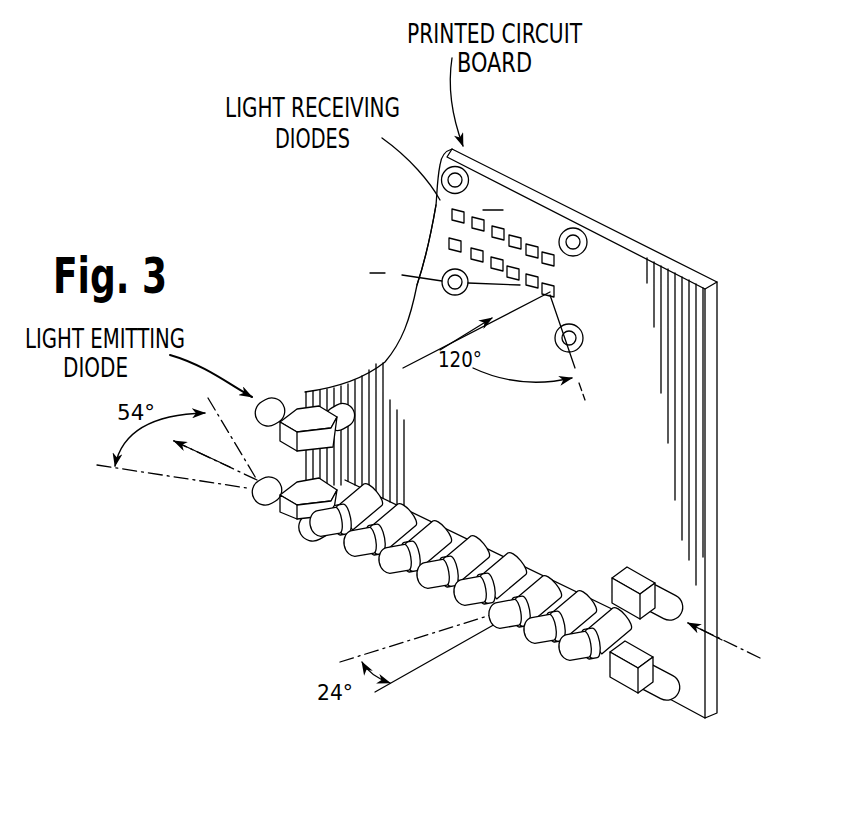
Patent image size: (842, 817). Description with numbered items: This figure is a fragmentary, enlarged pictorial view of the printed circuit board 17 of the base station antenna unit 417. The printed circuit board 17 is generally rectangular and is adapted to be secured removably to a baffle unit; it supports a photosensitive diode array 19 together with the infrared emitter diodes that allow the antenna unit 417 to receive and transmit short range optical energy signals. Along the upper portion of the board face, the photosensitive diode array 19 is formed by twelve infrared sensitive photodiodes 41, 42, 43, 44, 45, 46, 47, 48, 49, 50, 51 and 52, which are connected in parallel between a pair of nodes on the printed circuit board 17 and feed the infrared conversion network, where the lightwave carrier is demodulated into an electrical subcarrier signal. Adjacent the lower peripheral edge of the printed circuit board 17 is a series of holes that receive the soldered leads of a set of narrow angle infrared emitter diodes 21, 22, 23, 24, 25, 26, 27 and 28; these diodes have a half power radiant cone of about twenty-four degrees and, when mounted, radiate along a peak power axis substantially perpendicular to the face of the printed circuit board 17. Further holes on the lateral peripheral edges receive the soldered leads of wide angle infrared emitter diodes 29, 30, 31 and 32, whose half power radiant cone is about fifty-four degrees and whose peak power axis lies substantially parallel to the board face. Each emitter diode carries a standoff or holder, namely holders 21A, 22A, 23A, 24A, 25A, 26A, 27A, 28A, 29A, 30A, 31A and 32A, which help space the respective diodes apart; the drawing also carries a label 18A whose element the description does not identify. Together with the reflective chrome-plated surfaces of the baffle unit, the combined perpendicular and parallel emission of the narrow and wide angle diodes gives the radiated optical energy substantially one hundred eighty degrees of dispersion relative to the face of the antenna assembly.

The printed circuit board 17 is at (714, 357).
The photosensitive diode array 19 is at (414, 210).
The antenna unit 417 is at (242, 289).
The narrow angle infrared emitter diode 21 is at (311, 491).
The narrow angle infrared emitter diode 22 is at (316, 520).
The narrow angle infrared emitter diode 23 is at (360, 508).
The narrow angle infrared emitter diode 24 is at (381, 557).
The narrow angle infrared emitter diode 25 is at (434, 551).
The narrow angle infrared emitter diode 26 is at (539, 613).
The narrow angle infrared emitter diode 27 is at (583, 596).
The narrow angle infrared emitter diode 28 is at (610, 625).
The wide angle infrared emitter diode 29 is at (694, 693).
The wide angle infrared emitter diode 30 is at (692, 558).
The wide angle infrared emitter diode 31 is at (227, 509).
The wide angle infrared emitter diode 32 is at (303, 378).
The light emitting diode body 18A is at (470, 538).
The holder 21A is at (385, 484).
The holder 22A is at (418, 503).
The holder 23A is at (453, 522).
The holder 24A is at (492, 543).
The holder 25A is at (530, 560).
The holder 26A is at (566, 585).
The holder 27A is at (601, 600).
The holder 28A is at (634, 616).
The holder 29A is at (658, 662).
The holder 30A is at (683, 600).
The holder 31A is at (305, 532).
The holder 32A is at (311, 420).
The infrared sensitive photodiode 41 is at (468, 212).
The infrared sensitive photodiode 42 is at (485, 218).
The infrared sensitive photodiode 43 is at (503, 226).
The infrared sensitive photodiode 44 is at (520, 234).
The infrared sensitive photodiode 45 is at (540, 244).
The infrared sensitive photodiode 46 is at (553, 252).
The infrared sensitive photodiode 47 is at (554, 294).
The infrared sensitive photodiode 48 is at (552, 288).
The infrared sensitive photodiode 49 is at (513, 282).
The infrared sensitive photodiode 50 is at (398, 276).
The infrared sensitive photodiode 51 is at (445, 272).
The infrared sensitive photodiode 52 is at (449, 243).